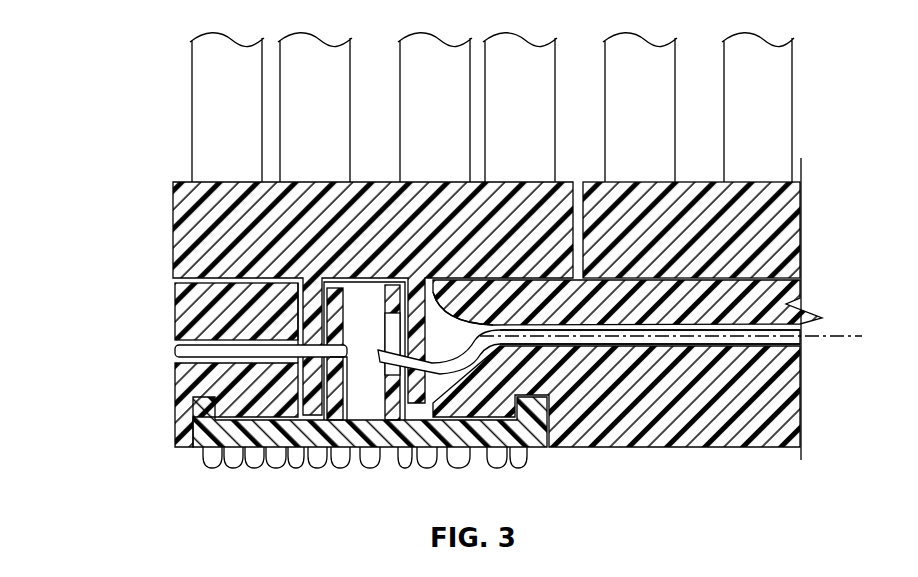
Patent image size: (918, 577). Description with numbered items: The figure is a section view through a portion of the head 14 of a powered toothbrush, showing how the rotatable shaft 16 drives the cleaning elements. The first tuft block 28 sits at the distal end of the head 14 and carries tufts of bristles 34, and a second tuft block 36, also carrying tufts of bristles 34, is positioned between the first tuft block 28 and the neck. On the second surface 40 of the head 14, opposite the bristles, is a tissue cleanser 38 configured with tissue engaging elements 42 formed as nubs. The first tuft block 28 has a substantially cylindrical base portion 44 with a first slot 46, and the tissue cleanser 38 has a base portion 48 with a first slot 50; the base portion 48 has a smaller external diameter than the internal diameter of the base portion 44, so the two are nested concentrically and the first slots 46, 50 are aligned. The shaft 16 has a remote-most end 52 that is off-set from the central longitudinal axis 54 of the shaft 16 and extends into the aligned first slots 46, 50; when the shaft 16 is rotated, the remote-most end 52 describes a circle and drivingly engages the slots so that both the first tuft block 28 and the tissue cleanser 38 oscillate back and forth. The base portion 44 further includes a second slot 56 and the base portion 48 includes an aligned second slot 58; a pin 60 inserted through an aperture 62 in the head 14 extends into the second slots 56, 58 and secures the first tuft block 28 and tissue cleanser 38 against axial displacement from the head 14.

The head 14 is at (100, 356).
The rotatable shaft 16 is at (787, 340).
The first tuft block 28 is at (178, 232).
The tufts of bristles 34 is at (782, 84).
The second tuft block 36 is at (785, 216).
The tissue cleanser 38 is at (515, 452).
The second surface 40 is at (590, 447).
The tissue engaging elements 42 is at (280, 465).
The base portion 44 is at (427, 303).
The first slot 46 is at (434, 352).
The base portion 48 is at (308, 446).
The first slot 50 is at (400, 298).
The remote-most end 52 is at (380, 352).
The central longitudinal axis 54 is at (835, 334).
The second slot 56 is at (300, 350).
The second slot 58 is at (347, 358).
The pin 60 is at (172, 352).
The aperture 62 is at (210, 362).